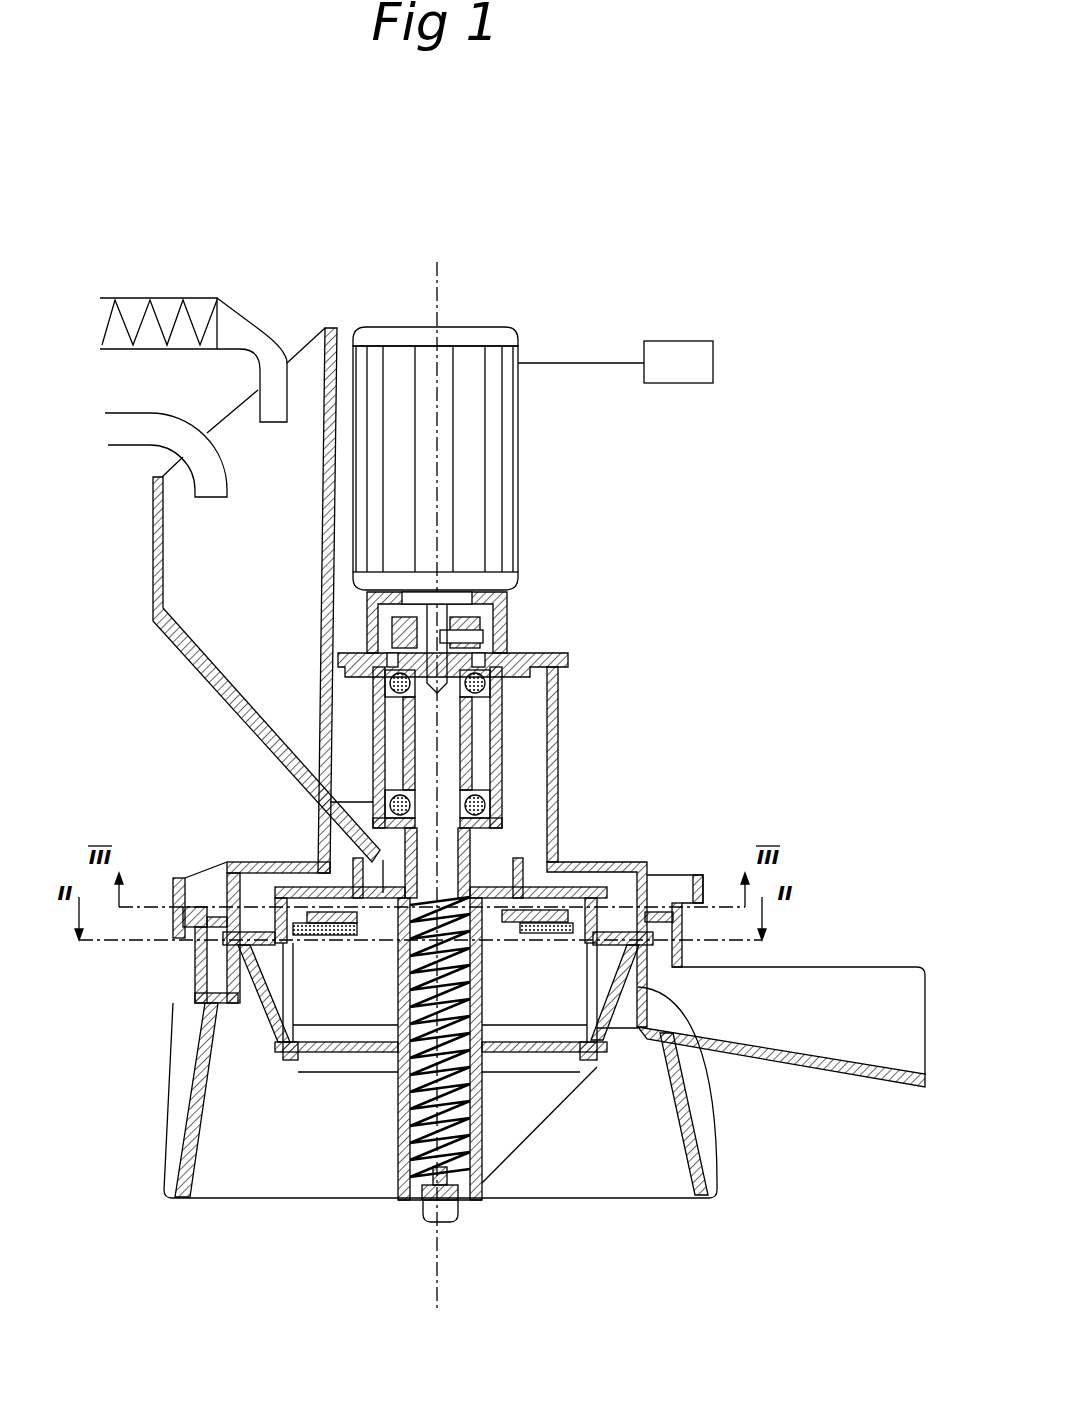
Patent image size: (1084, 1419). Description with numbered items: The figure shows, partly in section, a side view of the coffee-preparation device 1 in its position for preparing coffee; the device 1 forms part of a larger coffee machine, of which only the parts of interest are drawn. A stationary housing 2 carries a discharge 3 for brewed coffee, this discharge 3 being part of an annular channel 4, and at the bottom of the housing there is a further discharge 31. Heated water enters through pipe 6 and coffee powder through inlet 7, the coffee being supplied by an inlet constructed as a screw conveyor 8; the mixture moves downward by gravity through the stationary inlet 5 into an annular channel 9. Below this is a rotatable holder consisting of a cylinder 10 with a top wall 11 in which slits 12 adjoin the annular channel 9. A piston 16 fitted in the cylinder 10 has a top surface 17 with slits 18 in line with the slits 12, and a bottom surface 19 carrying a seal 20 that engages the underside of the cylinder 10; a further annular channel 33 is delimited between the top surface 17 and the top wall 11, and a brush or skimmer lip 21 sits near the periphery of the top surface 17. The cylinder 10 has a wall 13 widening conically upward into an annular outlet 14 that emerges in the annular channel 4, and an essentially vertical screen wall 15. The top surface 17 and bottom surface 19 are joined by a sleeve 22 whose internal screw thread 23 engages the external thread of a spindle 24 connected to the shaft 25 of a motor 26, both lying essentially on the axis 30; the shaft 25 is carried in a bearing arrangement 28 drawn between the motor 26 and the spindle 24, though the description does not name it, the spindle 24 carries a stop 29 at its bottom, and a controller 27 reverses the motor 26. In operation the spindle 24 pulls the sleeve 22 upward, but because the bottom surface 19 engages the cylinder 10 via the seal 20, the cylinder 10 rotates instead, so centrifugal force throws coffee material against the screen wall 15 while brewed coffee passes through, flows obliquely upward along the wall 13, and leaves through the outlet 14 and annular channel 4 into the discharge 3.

The device 1 is at (524, 328).
The stationary housing 2 is at (700, 1157).
The discharge 3 is at (873, 1045).
The annular channel 4 is at (216, 985).
The inlet 5 is at (225, 650).
The pipe 6 is at (156, 424).
The inlet 7 is at (247, 337).
The screw conveyor 8 is at (156, 320).
The annular channel 9 is at (478, 888).
The cylinder 10 is at (260, 1037).
The top wall 11 is at (540, 852).
The slits 12 is at (368, 835).
The wall 13 is at (258, 1007).
The annular outlet 14 is at (683, 940).
The screen wall 15 is at (700, 1033).
The piston 16 is at (368, 972).
The top surface 17 is at (332, 913).
The slits 18 is at (222, 984).
The bottom surface 19 is at (502, 1050).
The seal 20 is at (593, 1075).
The brush or skimmer lip 21 is at (580, 905).
The sleeve 22 is at (482, 1147).
The internal screw thread 23 is at (355, 1044).
The spindle 24 is at (398, 1100).
The shaft 25 is at (450, 720).
The motor 26 is at (497, 545).
The controller 27 is at (668, 350).
The bearing 28 is at (490, 802).
The stop 29 is at (418, 1190).
The axis 30 is at (430, 290).
The discharge 31 is at (307, 1153).
The annular channel 33 is at (545, 1050).